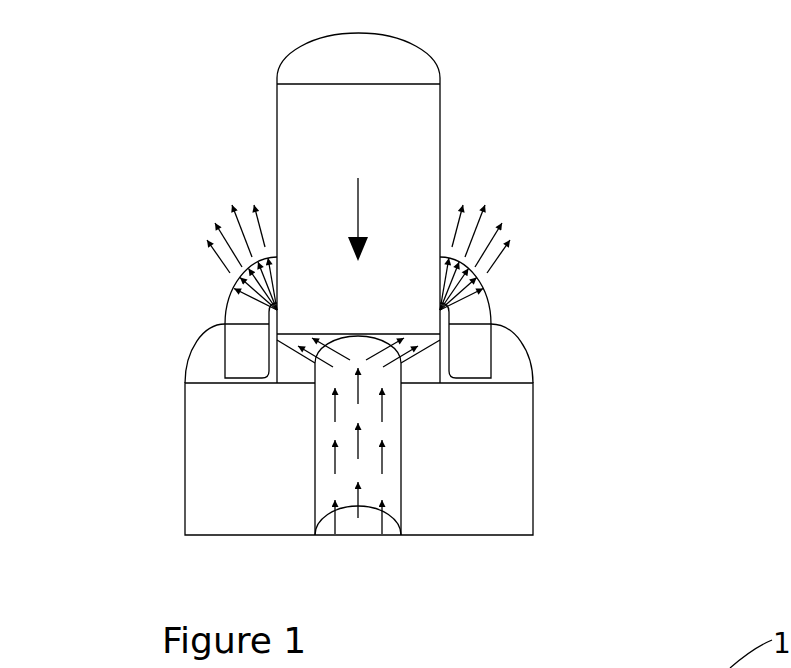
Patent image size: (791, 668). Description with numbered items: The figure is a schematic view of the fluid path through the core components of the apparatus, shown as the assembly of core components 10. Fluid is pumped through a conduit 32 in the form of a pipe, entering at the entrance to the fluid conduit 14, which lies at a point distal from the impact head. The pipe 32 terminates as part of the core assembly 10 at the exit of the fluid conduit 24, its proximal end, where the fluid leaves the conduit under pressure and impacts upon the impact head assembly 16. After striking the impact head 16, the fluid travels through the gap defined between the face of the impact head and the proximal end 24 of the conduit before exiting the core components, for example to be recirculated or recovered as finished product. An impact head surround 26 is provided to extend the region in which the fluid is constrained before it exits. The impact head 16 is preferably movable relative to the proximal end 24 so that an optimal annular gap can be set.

The assembly of core components 10 is at (538, 98).
The entrance to fluid conduit 14 is at (362, 544).
The impact head assembly 16 is at (311, 132).
The exit of fluid conduit 24 is at (427, 372).
The impact head surround 26 is at (467, 343).
The conduit/pipe 32 is at (222, 455).